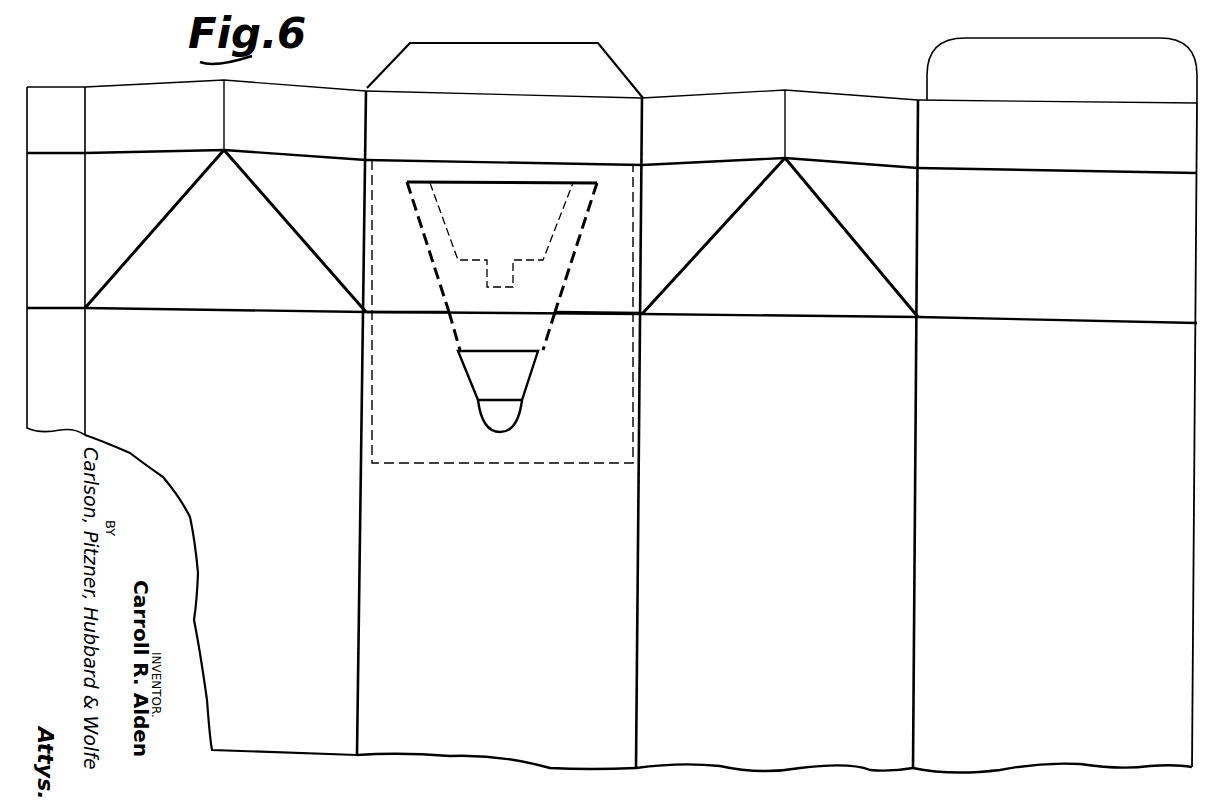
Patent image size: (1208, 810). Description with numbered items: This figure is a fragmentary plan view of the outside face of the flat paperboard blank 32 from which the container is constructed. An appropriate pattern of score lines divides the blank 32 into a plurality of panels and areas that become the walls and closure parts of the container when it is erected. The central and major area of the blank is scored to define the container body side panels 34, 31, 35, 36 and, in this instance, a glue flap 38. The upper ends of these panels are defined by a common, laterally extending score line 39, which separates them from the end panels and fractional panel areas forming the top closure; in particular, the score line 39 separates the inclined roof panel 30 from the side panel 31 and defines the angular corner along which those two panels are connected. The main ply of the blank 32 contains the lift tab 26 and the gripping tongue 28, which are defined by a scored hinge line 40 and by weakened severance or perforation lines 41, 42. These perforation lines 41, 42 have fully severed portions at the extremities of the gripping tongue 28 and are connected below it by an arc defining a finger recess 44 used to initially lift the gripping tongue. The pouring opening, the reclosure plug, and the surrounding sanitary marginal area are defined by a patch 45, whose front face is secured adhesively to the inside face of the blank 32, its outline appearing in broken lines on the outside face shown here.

The lift tab 26 is at (523, 341).
The gripping tongue 28 is at (518, 377).
The inclined roof panel 30 is at (602, 298).
The side panel 31 is at (494, 577).
The blank 32 is at (1197, 530).
The side panel 34 is at (225, 417).
The side panel 35 is at (766, 577).
The side panel 36 is at (1064, 574).
The glue flap 38 is at (62, 392).
The score line 39 is at (385, 312).
The scored hinge line 40 is at (535, 182).
The perforation line 41 is at (430, 256).
The perforation line 42 is at (580, 236).
The finger recess 44 is at (510, 413).
The patch 45 is at (602, 463).